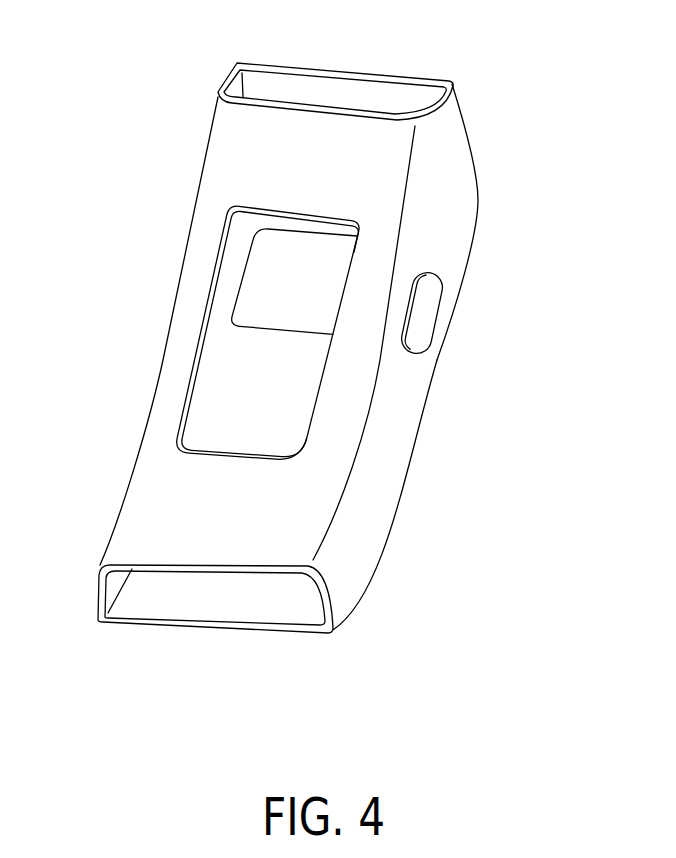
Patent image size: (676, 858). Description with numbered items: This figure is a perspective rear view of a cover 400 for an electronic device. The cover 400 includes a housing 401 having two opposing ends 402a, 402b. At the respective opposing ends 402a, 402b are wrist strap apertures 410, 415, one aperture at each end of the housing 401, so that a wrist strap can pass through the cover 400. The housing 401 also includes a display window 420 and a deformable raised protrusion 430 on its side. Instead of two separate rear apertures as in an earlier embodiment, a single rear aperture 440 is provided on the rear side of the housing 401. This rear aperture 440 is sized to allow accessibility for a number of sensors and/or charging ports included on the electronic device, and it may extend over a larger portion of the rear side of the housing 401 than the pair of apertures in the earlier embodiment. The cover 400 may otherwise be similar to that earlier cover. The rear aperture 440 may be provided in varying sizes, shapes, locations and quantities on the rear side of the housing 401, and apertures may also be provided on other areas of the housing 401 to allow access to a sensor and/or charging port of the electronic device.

The cover 400 is at (137, 90).
The housing 401 is at (328, 177).
The opposing end 402a is at (480, 127).
The opposing end 402b is at (362, 615).
The wrist strap aperture 410 is at (373, 80).
The wrist strap aperture 415 is at (152, 597).
The display window 420 is at (250, 233).
The deformable raised protrusion 430 is at (430, 303).
The rear aperture 440 is at (202, 343).